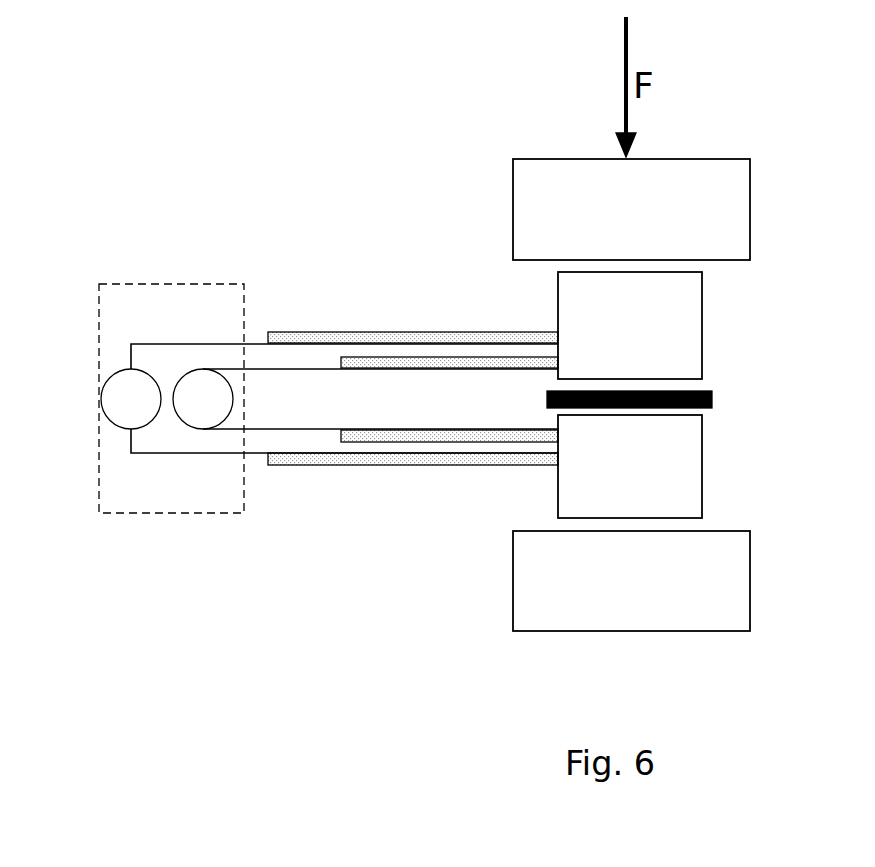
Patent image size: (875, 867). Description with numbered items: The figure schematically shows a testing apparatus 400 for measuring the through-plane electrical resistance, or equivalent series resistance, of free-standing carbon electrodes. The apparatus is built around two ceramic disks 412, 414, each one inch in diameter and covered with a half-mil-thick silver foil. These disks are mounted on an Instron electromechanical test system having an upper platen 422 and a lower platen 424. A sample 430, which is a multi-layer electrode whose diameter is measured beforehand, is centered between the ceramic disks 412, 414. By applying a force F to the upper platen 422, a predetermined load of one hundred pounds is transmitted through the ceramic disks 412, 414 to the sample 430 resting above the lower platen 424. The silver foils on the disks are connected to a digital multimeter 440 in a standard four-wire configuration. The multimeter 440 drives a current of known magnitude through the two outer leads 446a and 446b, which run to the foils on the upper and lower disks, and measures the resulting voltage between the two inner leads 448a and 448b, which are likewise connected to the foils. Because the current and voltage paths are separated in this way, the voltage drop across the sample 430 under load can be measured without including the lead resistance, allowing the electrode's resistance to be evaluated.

The testing apparatus 400 is at (280, 124).
The digital multimeter 440 is at (177, 282).
The outer lead 446a is at (438, 338).
The inner lead 448a is at (400, 360).
The inner lead 448b is at (397, 433).
The outer lead 446b is at (447, 463).
The upper platen 422 is at (750, 195).
The ceramic disk 412 is at (688, 332).
The sample 430 is at (712, 397).
The ceramic disk 414 is at (688, 492).
The lower platen 424 is at (750, 593).